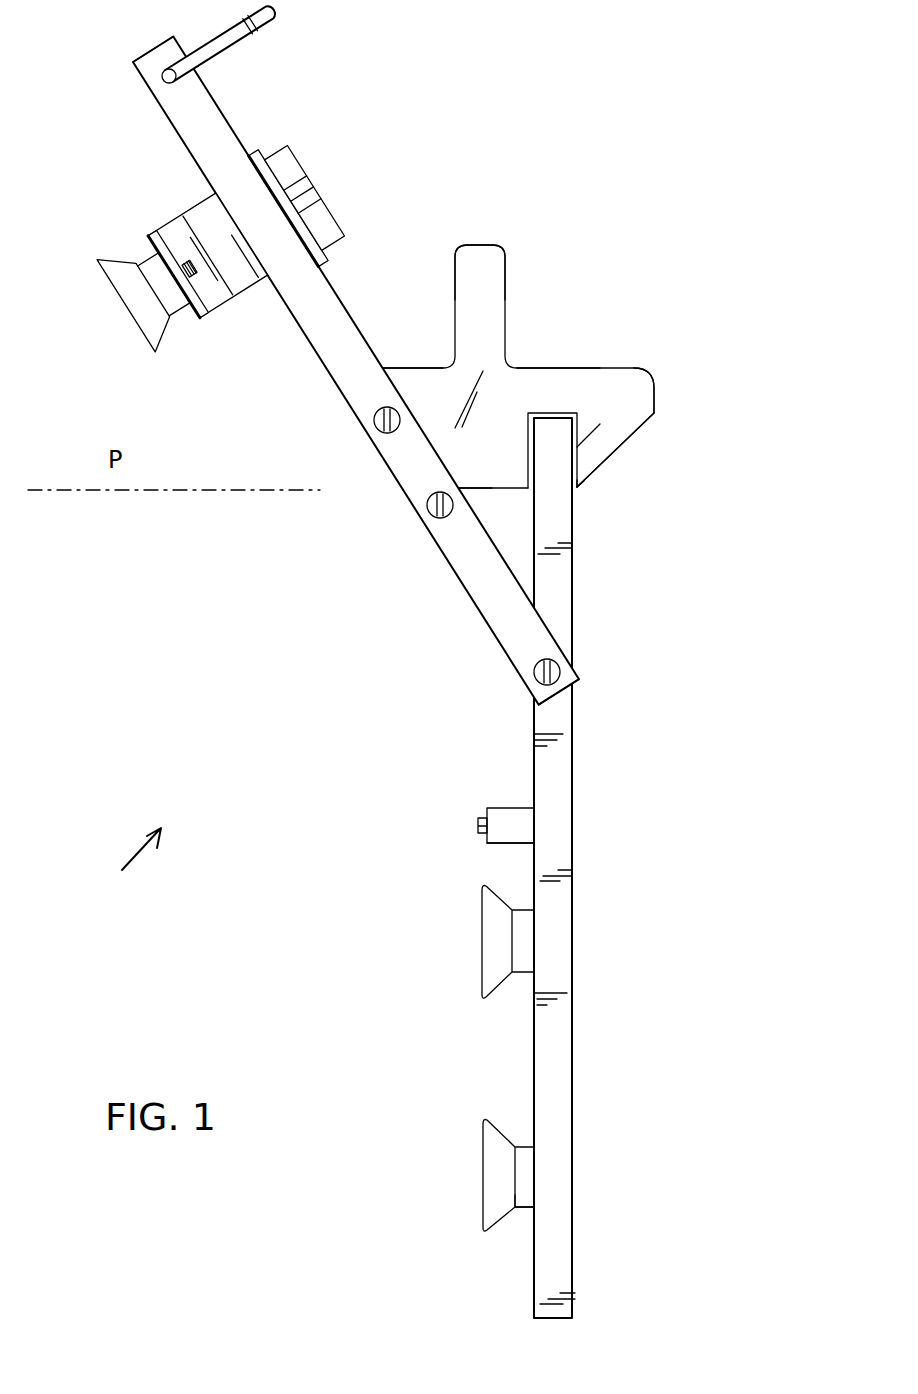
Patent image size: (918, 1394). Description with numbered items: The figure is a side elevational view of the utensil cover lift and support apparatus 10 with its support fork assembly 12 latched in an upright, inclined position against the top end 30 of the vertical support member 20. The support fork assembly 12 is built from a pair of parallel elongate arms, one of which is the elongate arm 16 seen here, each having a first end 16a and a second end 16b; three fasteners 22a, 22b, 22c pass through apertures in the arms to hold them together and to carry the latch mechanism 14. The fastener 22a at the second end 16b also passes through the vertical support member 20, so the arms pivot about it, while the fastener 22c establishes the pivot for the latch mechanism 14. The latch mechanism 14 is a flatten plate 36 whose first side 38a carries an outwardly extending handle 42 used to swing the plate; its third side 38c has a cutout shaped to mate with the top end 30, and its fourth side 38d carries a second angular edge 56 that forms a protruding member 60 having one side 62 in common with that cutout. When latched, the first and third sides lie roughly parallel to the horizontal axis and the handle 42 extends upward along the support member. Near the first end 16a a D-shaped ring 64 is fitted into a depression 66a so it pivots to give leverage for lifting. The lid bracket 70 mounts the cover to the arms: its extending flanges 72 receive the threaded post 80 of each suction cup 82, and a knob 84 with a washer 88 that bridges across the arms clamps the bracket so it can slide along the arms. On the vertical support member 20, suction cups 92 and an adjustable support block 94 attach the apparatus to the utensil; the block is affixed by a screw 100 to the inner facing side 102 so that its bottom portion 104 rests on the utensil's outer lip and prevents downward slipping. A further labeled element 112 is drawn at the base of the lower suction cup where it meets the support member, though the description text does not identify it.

The utensil cover lift and support apparatus 10 is at (127, 860).
The support fork assembly 12 is at (542, 411).
The latch mechanism 14 is at (515, 432).
The elongate arm 16 is at (193, 163).
The first end 16a is at (163, 112).
The second end 16b is at (565, 648).
The vertical support member 20 is at (574, 771).
The fastener 22a is at (533, 672).
The fastener 22b is at (427, 508).
The fastener 22c is at (373, 421).
The top end 30 is at (553, 413).
The flatten plate 36 is at (404, 366).
The first side 38a is at (545, 367).
The third side 38c is at (492, 489).
The fourth side 38d is at (656, 392).
The handle 42 is at (458, 248).
The second angular edge 56 is at (638, 430).
The protruding member 60 is at (580, 489).
The side 62 is at (578, 447).
The D-shaped ring 64 is at (238, 43).
The depression 66a is at (162, 82).
The lid bracket 70 is at (223, 303).
The extending flange 72 is at (148, 233).
The threaded post 80 is at (196, 272).
The suction cup 82 is at (108, 290).
The knob 84 is at (295, 162).
The washer 88 is at (262, 148).
The suction cup 92 is at (483, 1147).
The adjustable support block 94 is at (513, 807).
The screw 100 is at (478, 823).
The inner facing side 102 is at (532, 1048).
The bottom portion 104 is at (498, 845).
The nozzle base 112 is at (528, 1210).